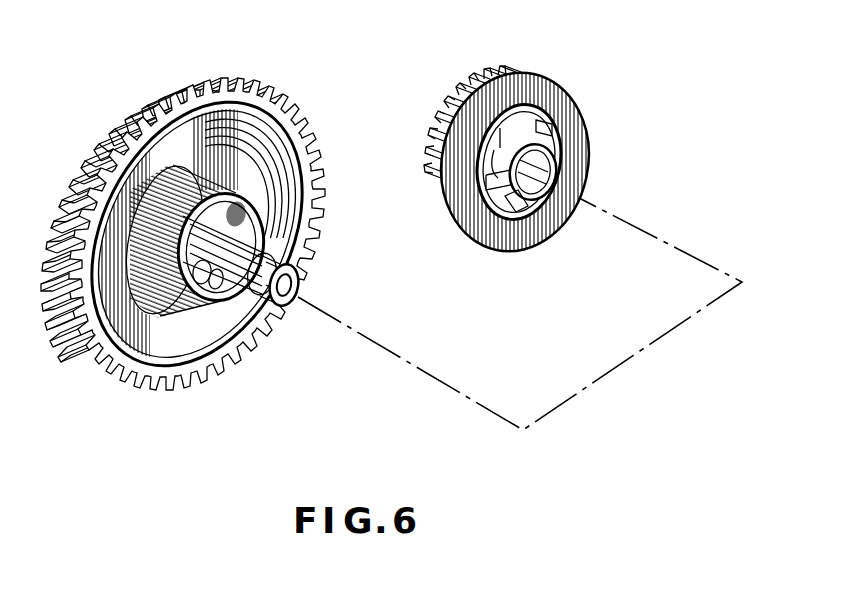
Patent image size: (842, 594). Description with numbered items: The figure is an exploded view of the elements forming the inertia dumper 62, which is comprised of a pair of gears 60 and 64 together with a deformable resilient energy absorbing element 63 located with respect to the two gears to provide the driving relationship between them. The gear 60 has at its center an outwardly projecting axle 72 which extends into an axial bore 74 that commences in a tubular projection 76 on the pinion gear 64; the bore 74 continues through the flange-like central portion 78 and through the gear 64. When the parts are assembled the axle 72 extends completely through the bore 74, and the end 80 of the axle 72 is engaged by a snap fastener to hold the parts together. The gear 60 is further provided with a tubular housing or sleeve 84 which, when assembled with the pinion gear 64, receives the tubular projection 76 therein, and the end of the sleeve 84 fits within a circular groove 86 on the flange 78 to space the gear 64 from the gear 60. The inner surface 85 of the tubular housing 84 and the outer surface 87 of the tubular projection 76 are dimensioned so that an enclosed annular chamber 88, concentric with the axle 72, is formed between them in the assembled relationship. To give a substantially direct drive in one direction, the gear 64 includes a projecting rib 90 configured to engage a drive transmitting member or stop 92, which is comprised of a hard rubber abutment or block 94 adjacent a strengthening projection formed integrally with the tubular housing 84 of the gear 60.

The gear 60 is at (242, 78).
The inertia dumper 62 is at (148, 79).
The deformable resilient energy absorbing element 63 is at (254, 232).
The pinion gear 64 is at (461, 97).
The axle 72 is at (248, 303).
The axial bore 74 is at (557, 174).
The tubular projection 76 is at (548, 160).
The flange-like central portion 78 is at (500, 77).
The end of axle 80 is at (288, 297).
The tubular housing or sleeve 84 is at (165, 305).
The inner surface 85 is at (292, 252).
The circular groove 86 is at (543, 113).
The outer surface 87 is at (486, 177).
The annular chamber 88 is at (250, 212).
The projecting rib 90 is at (524, 216).
The drive transmitting member or stop 92 is at (213, 292).
The hard rubber abutment or block 94 is at (212, 300).